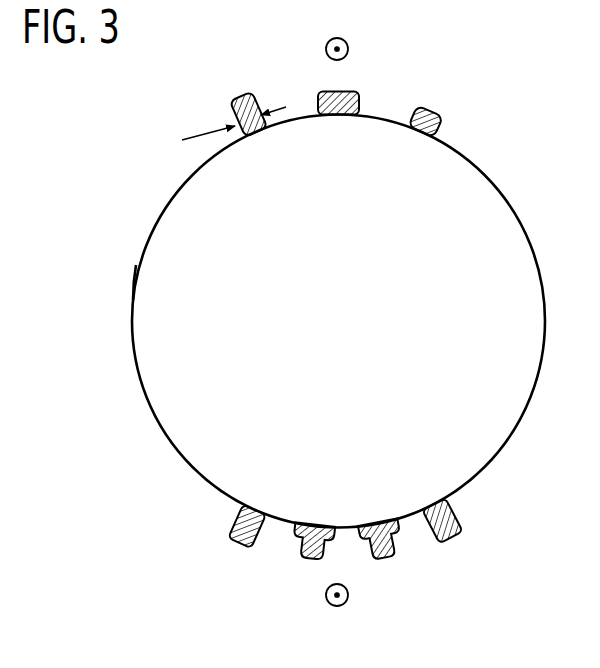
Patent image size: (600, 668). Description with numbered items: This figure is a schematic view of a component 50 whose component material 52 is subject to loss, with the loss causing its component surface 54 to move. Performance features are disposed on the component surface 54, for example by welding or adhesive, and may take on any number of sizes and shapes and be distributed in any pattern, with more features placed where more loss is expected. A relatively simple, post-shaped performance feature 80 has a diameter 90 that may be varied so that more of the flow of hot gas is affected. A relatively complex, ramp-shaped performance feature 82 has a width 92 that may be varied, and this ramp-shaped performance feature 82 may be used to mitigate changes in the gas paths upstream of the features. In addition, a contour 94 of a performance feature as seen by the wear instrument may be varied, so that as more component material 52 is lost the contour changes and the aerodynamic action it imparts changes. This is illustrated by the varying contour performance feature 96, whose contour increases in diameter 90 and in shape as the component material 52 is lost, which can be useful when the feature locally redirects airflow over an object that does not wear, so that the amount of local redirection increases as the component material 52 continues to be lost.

The component 50 is at (368, 333).
The component material 52 is at (338, 321).
The component surface 54 is at (132, 283).
The post-shaped performance feature 80 is at (242, 94).
The ramp-shaped performance feature 82 is at (242, 548).
The diameter 90 is at (208, 128).
The width 92 is at (273, 111).
The contour 94 is at (395, 565).
The varying contour performance feature 96 is at (307, 558).